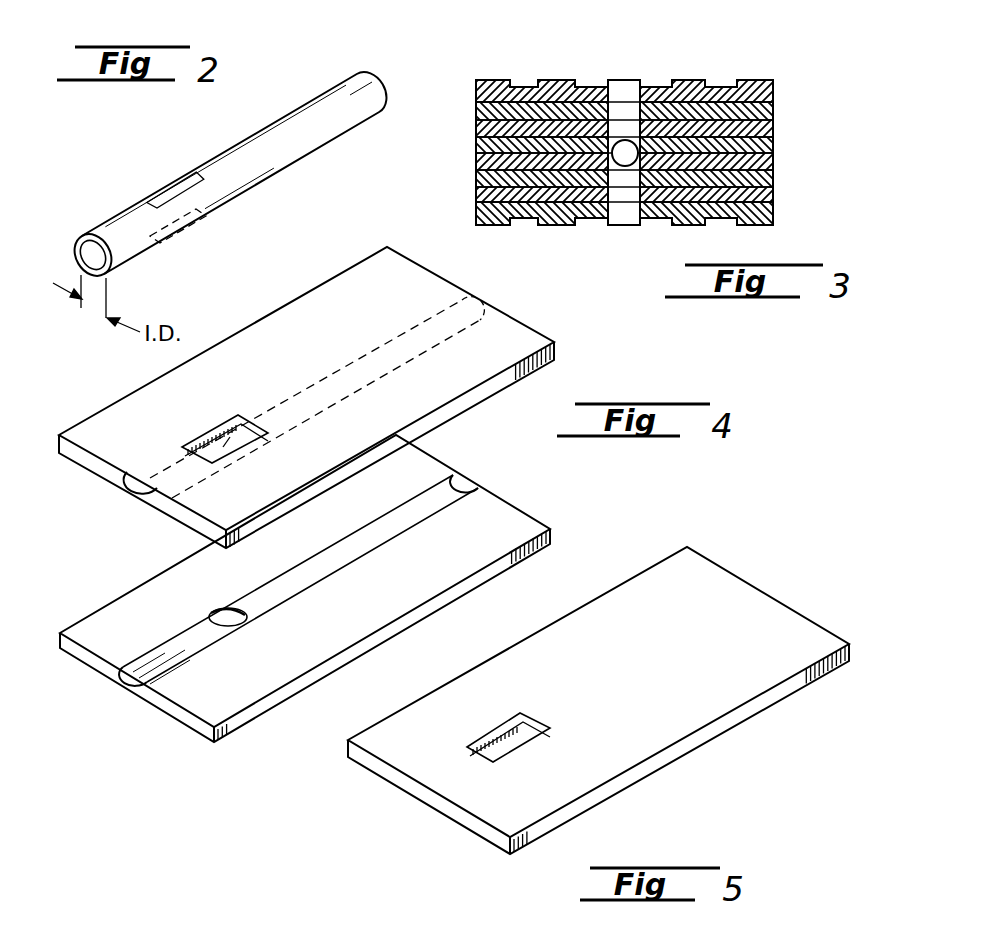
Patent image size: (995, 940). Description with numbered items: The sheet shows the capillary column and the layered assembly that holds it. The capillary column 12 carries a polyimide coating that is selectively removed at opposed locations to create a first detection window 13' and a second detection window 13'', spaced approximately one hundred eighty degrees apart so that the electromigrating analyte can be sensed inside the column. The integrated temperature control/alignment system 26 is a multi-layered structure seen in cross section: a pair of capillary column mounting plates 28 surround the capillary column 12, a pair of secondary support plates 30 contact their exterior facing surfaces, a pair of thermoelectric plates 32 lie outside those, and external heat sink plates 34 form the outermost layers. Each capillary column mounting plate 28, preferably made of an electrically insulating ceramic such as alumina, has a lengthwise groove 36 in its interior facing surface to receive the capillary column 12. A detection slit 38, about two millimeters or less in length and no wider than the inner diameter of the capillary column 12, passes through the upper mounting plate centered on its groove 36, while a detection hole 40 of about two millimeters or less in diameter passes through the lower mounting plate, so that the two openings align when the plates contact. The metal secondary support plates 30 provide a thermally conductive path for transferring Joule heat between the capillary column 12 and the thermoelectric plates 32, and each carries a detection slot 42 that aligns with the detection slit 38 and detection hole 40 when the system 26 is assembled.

In FIG. 2, the capillary column 12 is at (186, 122).
In FIG. 2, the first detection window 13' is at (165, 177).
In FIG. 2, the second detection window 13'' is at (175, 255).
In FIG. 3, the integrated temperature control/alignment system 26 is at (805, 130).
In FIG. 3, the capillary column mounting plate 28 is at (476, 146).
In FIG. 4, the capillary column mounting plate 28 is at (345, 297).
In FIG. 3, the secondary support plate 30 is at (476, 128).
In FIG. 5, the secondary support plate 30 is at (652, 730).
In FIG. 3, the thermoelectric plate 32 is at (476, 111).
In FIG. 3, the external heat sink plate 34 is at (475, 94).
In FIG. 3, the lengthwise groove 36 is at (652, 122).
In FIG. 4, the lengthwise groove 36 is at (141, 492).
In FIG. 4, the detection slit 38 is at (237, 415).
In FIG. 4, the detection hole 40 is at (215, 610).
In FIG. 5, the detection slot 42 is at (518, 737).